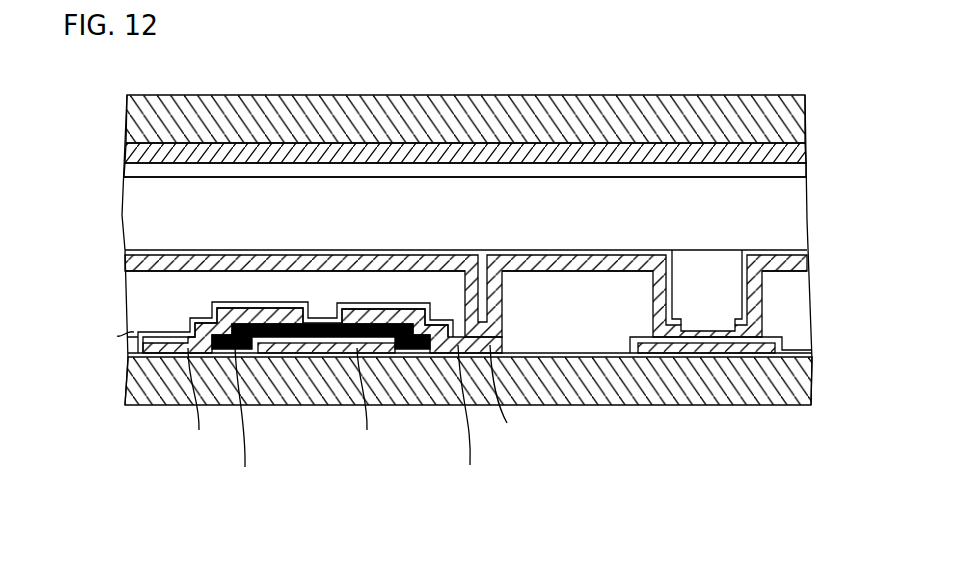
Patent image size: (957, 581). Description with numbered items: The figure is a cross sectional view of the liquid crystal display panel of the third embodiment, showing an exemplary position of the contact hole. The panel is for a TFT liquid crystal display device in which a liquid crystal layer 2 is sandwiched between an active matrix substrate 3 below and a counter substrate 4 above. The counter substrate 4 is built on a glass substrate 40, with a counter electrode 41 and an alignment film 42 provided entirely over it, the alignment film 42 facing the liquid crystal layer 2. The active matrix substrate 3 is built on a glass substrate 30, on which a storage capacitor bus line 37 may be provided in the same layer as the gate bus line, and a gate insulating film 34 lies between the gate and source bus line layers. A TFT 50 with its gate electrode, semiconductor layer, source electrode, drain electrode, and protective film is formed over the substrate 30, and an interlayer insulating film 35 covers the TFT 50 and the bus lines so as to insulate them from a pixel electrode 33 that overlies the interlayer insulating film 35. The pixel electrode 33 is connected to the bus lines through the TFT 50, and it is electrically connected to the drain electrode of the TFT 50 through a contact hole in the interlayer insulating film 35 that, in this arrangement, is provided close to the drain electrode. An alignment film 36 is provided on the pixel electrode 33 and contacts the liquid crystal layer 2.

The liquid crystal layer 2 is at (808, 214).
The active matrix substrate 3 is at (460, 363).
The counter substrate 4 is at (507, 142).
The substrate 30 is at (810, 393).
The pixel electrode 33 is at (810, 266).
The gate insulating film 34 is at (785, 338).
The interlayer insulating film 35 is at (806, 297).
The alignment film 36 is at (810, 251).
The storage capacitor bus line 37 is at (810, 364).
The substrate 40 is at (808, 115).
The counter electrode 41 is at (808, 152).
The alignment film 42 is at (489, 177).
The TFT 50 is at (323, 297).